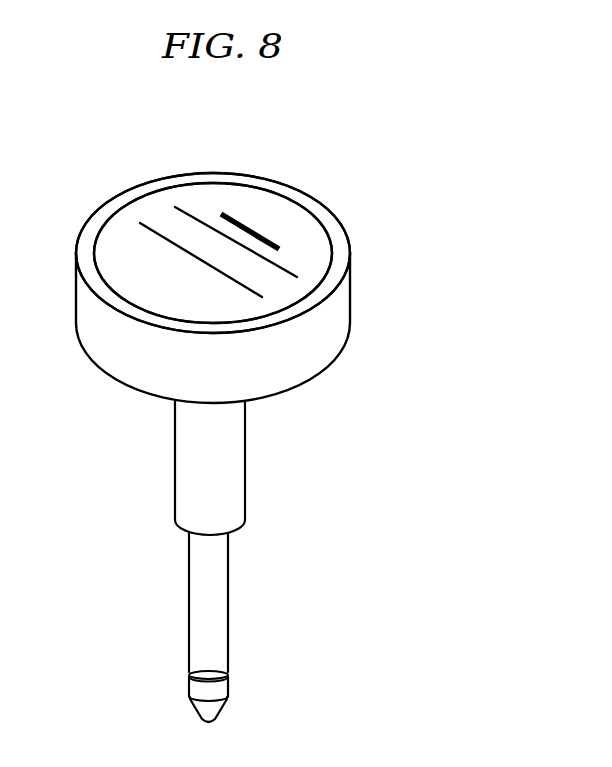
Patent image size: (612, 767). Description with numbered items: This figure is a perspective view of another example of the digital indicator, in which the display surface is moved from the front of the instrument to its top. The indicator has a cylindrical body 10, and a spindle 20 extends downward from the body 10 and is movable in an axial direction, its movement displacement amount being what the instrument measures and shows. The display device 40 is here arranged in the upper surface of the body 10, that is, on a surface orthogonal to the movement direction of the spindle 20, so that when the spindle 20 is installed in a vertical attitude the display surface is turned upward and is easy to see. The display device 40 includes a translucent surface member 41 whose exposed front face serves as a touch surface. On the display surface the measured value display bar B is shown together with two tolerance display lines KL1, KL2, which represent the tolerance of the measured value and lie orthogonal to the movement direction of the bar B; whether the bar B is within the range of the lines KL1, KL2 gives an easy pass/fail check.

The body 10 is at (117, 360).
The spindle 20 is at (228, 598).
The display device 40 is at (117, 237).
The surface member 41 is at (155, 208).
The measured value display bar B is at (255, 232).
The tolerance display line KL1 is at (240, 280).
The tolerance display line KL2 is at (287, 267).